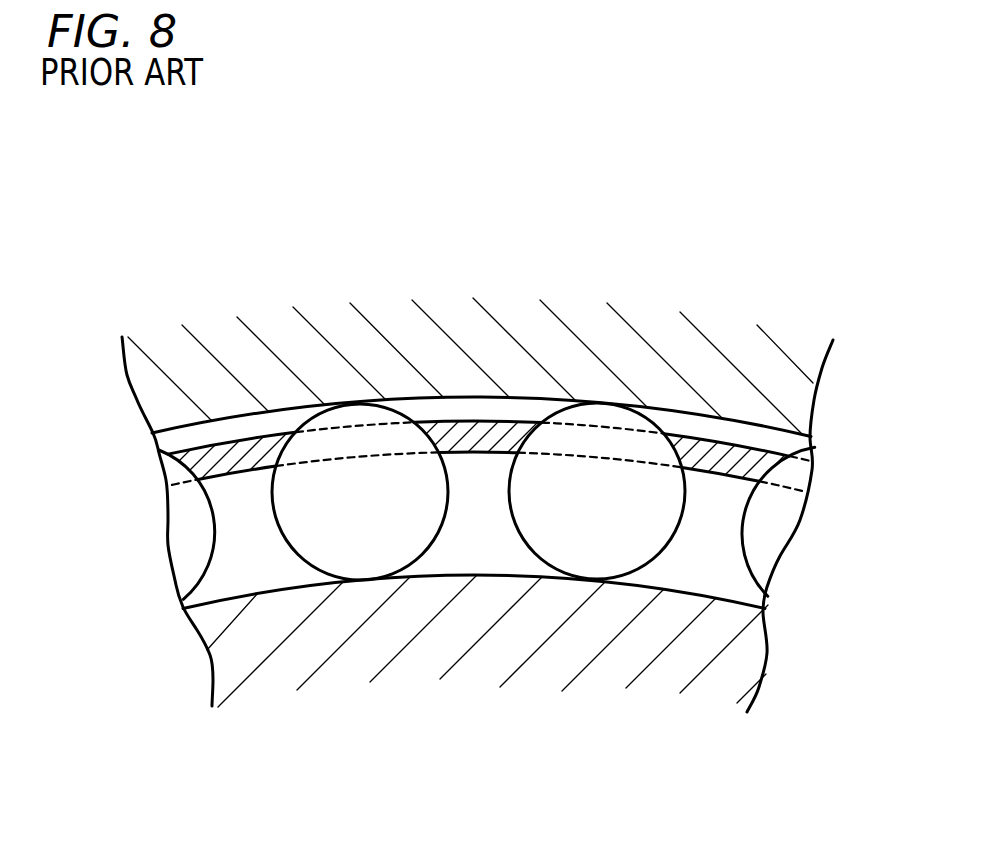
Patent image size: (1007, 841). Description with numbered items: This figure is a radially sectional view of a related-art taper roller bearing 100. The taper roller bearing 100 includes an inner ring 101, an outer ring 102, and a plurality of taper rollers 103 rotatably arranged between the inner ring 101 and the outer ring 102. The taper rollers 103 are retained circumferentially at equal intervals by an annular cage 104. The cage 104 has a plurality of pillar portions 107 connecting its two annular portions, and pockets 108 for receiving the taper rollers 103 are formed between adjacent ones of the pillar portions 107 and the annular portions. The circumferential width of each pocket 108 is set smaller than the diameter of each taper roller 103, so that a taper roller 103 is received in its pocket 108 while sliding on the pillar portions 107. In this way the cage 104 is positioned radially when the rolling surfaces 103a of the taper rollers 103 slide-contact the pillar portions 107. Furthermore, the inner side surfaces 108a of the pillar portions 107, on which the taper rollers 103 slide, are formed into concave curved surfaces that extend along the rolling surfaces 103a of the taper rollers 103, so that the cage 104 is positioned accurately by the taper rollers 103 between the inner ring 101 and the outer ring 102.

The taper roller bearing 100 is at (783, 244).
The inner ring 101 is at (667, 660).
The outer ring 102 is at (533, 327).
The taper roller 103 is at (542, 553).
The rolling surface 103a is at (291, 536).
The annular cage 104 is at (728, 426).
The pillar portion 107 is at (460, 432).
The pocket 108 is at (544, 439).
The inner side surface 108a is at (667, 445).